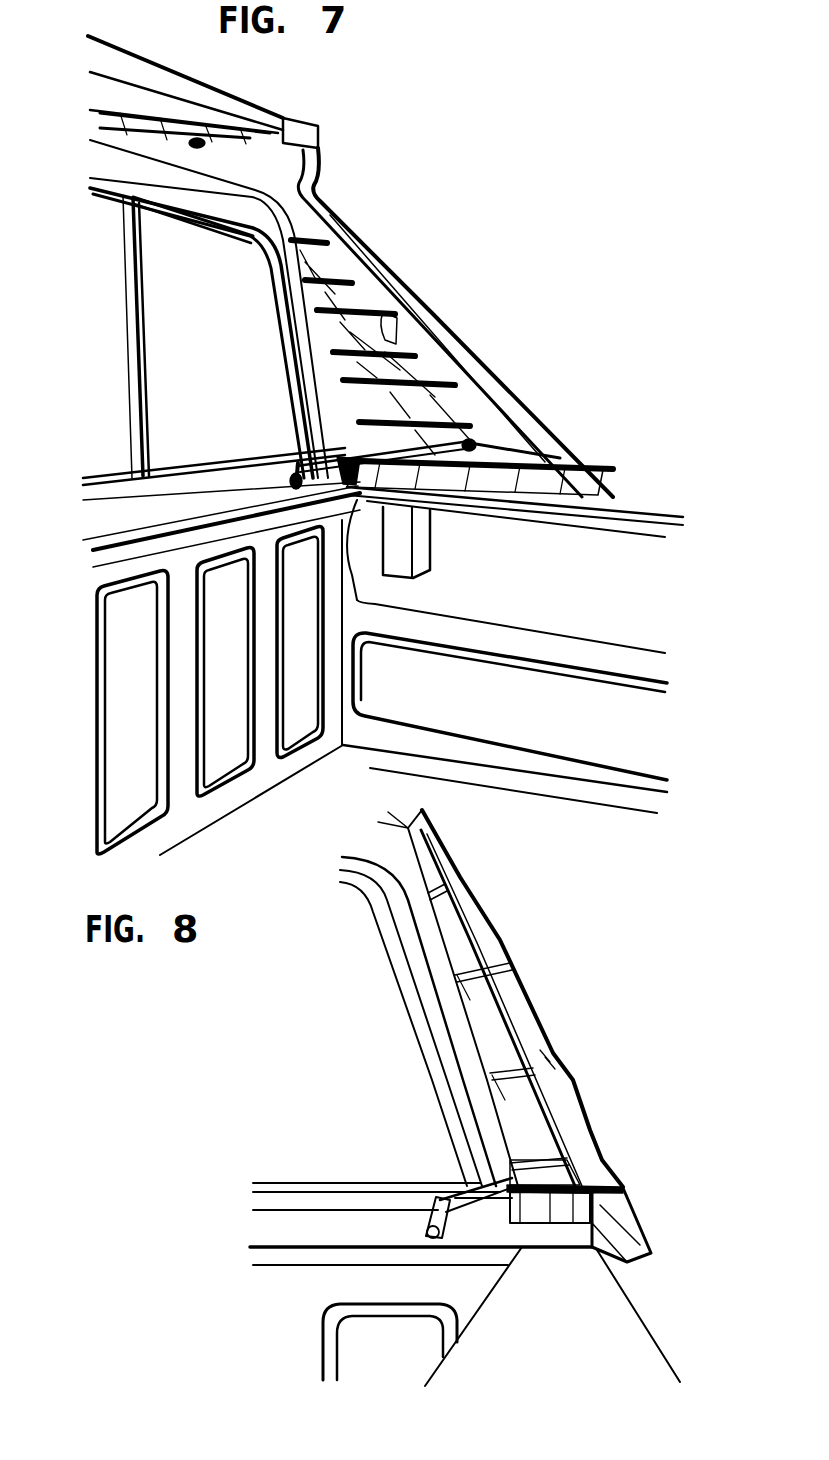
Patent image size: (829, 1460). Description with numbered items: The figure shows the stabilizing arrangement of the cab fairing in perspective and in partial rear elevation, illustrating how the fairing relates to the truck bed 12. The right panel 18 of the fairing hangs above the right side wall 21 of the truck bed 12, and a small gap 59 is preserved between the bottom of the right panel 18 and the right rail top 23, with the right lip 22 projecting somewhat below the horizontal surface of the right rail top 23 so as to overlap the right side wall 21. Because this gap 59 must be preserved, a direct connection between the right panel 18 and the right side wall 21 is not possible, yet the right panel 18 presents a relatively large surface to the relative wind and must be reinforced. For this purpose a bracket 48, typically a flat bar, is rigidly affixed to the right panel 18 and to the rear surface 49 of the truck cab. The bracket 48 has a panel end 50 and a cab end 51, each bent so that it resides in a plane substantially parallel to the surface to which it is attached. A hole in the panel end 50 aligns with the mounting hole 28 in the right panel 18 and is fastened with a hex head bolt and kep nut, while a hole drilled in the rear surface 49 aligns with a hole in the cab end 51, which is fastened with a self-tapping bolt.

In FIG. 7, the truck bed 12 is at (352, 798).
In FIG. 7, the right panel 18 is at (473, 483).
In FIG. 8, the right panel 18 is at (550, 1054).
In FIG. 7, the right side wall 21 is at (600, 522).
In FIG. 8, the right side wall 21 is at (663, 1367).
In FIG. 8, the right lip 22 is at (633, 1214).
In FIG. 8, the right rail top 23 is at (593, 1333).
In FIG. 7, the mounting hole 28 is at (513, 458).
In FIG. 7, the bracket 48 is at (337, 450).
In FIG. 8, the bracket 48 is at (480, 1190).
In FIG. 7, the rear surface 49 is at (182, 530).
In FIG. 8, the rear surface 49 is at (338, 1231).
In FIG. 7, the panel end 50 is at (472, 442).
In FIG. 7, the cab end 51 is at (268, 456).
In FIG. 8, the cab end 51 is at (430, 1210).
In FIG. 8, the gap 59 is at (615, 1259).